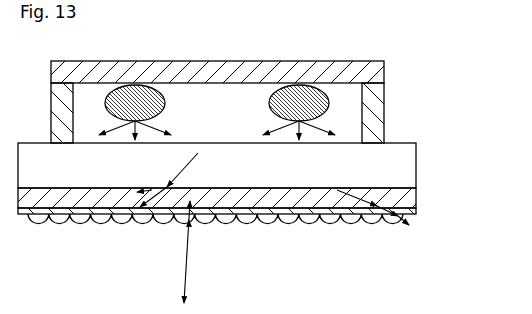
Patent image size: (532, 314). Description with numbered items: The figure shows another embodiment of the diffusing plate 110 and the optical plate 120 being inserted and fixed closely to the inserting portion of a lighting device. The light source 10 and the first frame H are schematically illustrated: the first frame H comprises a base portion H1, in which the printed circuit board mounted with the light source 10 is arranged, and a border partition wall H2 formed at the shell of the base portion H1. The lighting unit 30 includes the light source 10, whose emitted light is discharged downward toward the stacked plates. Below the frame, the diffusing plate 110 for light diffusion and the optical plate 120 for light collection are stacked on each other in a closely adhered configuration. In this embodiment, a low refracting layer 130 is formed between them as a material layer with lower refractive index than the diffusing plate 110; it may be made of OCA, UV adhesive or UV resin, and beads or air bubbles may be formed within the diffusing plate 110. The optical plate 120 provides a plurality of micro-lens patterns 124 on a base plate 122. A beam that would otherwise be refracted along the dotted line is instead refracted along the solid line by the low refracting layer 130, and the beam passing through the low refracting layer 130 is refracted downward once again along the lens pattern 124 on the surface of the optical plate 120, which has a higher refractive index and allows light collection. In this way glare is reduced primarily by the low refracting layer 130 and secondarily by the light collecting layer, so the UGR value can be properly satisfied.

The lighting unit 30 is at (386, 71).
The light source 10 is at (362, 108).
The base portion H1 is at (366, 60).
The first frame H is at (459, 83).
The border partition wall H2 is at (387, 83).
The diffusing plate 110 is at (416, 168).
The low refracting layer 130 is at (416, 195).
The base plate 122 is at (416, 215).
The micro-lens pattern 124 is at (397, 226).
The optical plate 120 is at (263, 231).